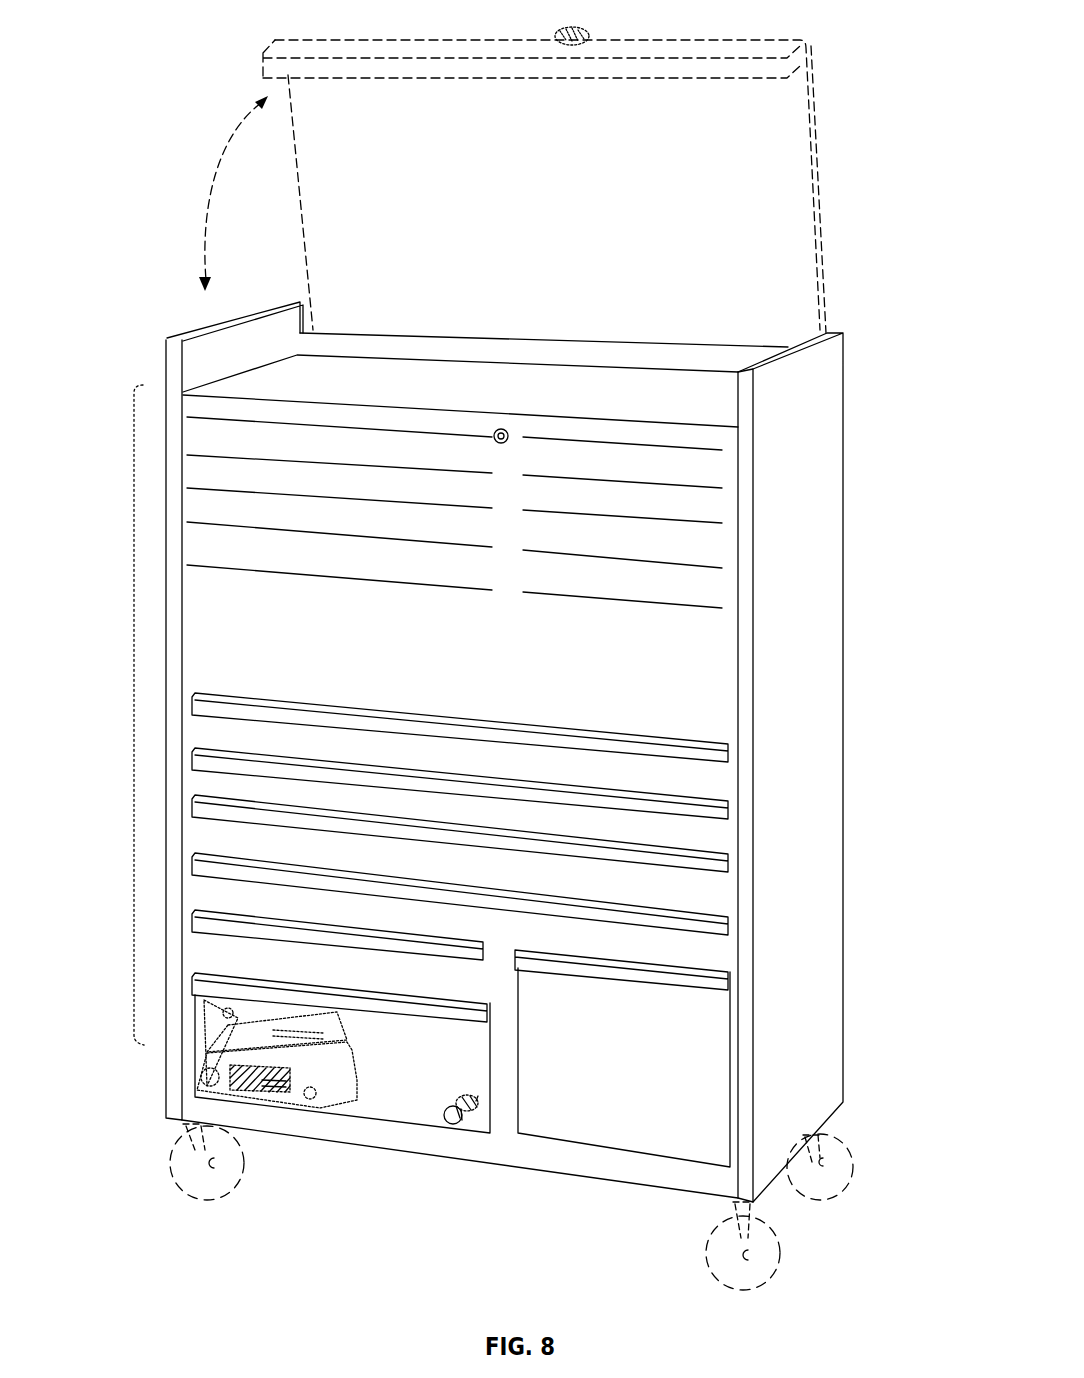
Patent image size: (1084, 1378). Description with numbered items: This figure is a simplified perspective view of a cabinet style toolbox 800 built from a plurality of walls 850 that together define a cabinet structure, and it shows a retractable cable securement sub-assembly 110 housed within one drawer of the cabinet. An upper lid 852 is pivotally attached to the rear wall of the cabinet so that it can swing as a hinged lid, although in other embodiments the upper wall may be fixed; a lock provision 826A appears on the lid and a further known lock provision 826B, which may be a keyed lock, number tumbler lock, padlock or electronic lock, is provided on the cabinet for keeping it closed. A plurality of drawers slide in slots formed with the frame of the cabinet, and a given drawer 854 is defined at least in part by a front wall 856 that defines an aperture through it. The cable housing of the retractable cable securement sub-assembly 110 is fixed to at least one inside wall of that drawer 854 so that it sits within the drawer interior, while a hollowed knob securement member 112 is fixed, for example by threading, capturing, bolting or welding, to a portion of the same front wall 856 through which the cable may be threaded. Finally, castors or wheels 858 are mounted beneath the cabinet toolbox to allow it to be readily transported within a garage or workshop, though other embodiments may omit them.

The toolbox 800 is at (107, 64).
The walls 850 is at (836, 608).
The upper lid 852 is at (578, 204).
The lock 826A is at (561, 29).
The lock provision 826B is at (529, 449).
The drawer 854 is at (208, 1014).
The front wall 856 is at (458, 1056).
The retractable cable securement sub-assembly 110 is at (340, 1068).
The hollowed knob securement member 112 is at (449, 1108).
The castors or wheels 858 is at (851, 1161).